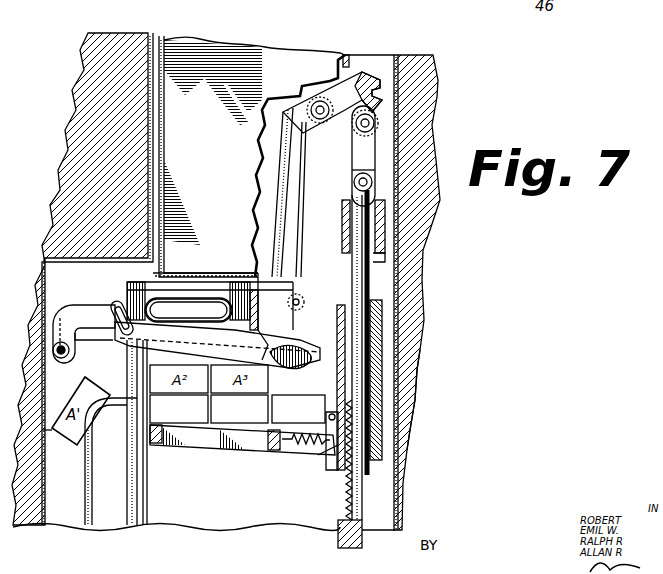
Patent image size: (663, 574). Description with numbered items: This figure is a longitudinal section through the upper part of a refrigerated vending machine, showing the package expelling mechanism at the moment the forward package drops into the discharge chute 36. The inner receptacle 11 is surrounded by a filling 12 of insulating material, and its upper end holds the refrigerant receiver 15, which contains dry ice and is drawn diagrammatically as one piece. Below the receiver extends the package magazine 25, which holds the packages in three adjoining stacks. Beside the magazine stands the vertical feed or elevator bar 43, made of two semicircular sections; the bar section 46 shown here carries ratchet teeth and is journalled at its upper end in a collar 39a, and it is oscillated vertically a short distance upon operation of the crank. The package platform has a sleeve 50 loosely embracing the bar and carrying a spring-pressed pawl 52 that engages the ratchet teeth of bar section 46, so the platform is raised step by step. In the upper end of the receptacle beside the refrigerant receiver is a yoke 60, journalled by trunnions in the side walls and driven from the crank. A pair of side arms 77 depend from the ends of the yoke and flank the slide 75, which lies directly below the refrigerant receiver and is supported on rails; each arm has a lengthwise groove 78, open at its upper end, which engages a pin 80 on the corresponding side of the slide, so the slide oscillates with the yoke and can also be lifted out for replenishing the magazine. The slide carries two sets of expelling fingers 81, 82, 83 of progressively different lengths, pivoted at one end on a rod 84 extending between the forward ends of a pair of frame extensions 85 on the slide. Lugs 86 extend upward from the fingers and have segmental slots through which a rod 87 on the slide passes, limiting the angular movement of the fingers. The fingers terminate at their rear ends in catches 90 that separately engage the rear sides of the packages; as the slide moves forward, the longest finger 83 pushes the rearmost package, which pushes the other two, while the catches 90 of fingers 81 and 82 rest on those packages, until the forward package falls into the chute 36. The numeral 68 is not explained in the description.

The inner shell or receptacle 11 is at (437, 97).
The filling of insulating material 12 is at (416, 384).
The refrigerant receiver 15 is at (290, 56).
The package magazine 25 is at (140, 505).
The discharge chute 36 is at (76, 520).
The collar 39a is at (386, 252).
The feed or elevator bar 43 is at (228, 438).
The bar section 46 is at (352, 266).
The sleeve 50 is at (372, 428).
The pawl 52 is at (330, 442).
The yoke 60 is at (372, 79).
The tray support 68 is at (194, 440).
The slide 75 is at (128, 285).
The side arms 77 is at (283, 186).
The groove 78 is at (296, 210).
The pin 80 is at (300, 304).
The expelling finger 81 is at (132, 341).
The expelling finger 82 is at (188, 310).
The expelling finger 83 is at (300, 349).
The rod 84 is at (59, 365).
The frame extensions 85 is at (73, 312).
The lugs 86 is at (120, 305).
The rod 87 is at (188, 310).
The catches 90 is at (298, 368).